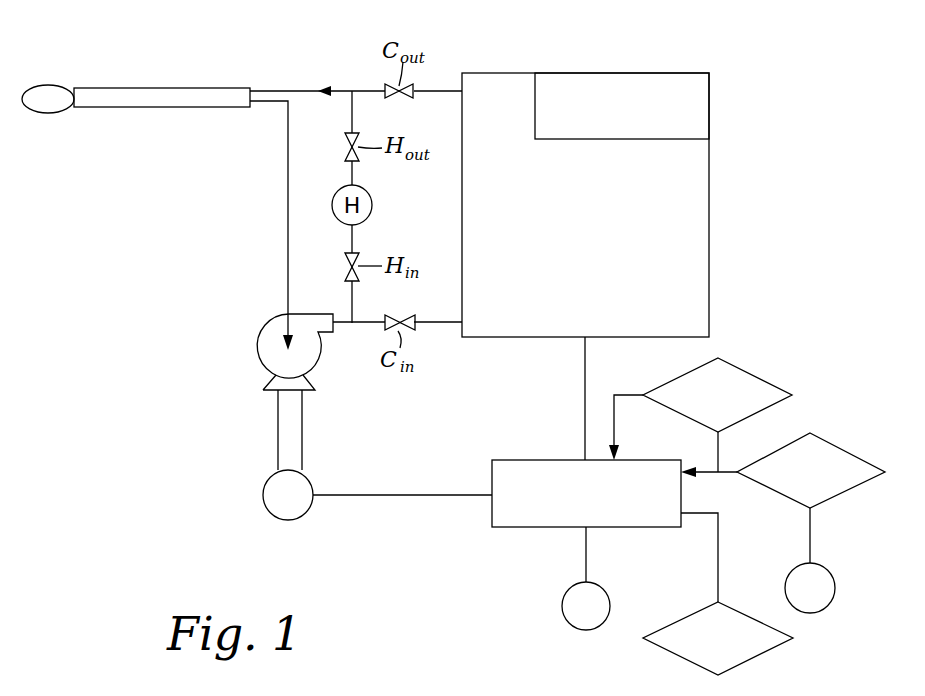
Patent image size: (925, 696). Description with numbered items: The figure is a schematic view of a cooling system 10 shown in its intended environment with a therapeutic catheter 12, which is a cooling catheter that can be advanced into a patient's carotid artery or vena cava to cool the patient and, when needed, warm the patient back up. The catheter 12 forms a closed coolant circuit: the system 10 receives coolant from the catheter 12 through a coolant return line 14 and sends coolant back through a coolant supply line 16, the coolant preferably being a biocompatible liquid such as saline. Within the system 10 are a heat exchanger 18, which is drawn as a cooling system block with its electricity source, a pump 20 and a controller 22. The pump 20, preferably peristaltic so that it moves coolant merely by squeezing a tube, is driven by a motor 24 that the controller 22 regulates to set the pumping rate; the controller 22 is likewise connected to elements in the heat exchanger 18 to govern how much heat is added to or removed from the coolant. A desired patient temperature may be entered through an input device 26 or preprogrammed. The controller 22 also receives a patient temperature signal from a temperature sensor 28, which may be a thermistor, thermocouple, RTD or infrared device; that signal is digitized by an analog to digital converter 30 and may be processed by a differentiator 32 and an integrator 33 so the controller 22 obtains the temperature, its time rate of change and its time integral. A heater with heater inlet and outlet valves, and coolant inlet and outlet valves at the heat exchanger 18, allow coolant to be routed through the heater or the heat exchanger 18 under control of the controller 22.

The cooling system 10 is at (136, 438).
The therapeutic catheter 12 is at (172, 108).
The coolant return line 14 is at (287, 205).
The coolant supply line 16 is at (362, 90).
The heat exchanger 18 is at (502, 72).
The pump 20 is at (255, 347).
The controller 22 is at (547, 460).
The motor 24 is at (263, 495).
The input device 26 is at (562, 602).
The temperature sensor 28 is at (828, 607).
The analog to digital converter 30 is at (815, 437).
The differentiator 32 is at (755, 375).
The integrator 33 is at (680, 662).